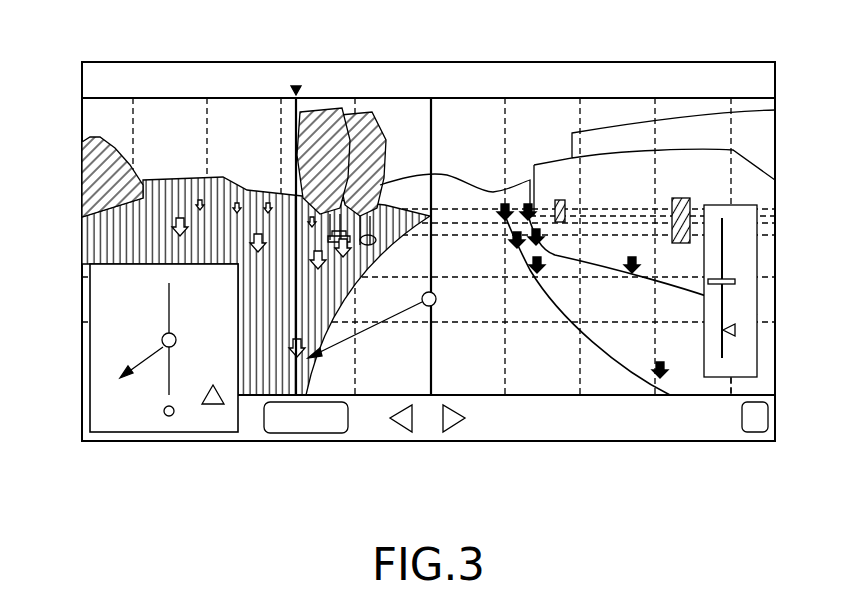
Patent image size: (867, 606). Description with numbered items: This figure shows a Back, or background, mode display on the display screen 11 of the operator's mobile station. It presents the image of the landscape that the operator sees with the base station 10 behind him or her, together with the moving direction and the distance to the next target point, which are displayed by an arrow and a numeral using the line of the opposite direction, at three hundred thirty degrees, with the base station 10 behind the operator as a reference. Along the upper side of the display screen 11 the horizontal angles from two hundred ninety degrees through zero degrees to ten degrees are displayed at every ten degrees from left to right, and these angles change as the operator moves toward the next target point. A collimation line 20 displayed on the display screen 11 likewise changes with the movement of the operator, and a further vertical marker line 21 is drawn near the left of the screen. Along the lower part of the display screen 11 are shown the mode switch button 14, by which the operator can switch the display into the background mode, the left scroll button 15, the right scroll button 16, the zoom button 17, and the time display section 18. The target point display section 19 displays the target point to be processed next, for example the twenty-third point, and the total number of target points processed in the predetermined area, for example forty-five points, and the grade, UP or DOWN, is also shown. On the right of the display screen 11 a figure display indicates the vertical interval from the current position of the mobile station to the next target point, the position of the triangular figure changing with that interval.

The base station 10 is at (134, 378).
The display screen 11 is at (776, 300).
The mode switch button 14 is at (302, 435).
The left scroll button 15 is at (398, 435).
The right scroll button 16 is at (453, 435).
The zoom button 17 is at (769, 418).
The time display section 18 is at (702, 458).
The target point display section 19 is at (510, 435).
The collimation line 20 is at (431, 128).
The scale marker line 21 is at (294, 130).